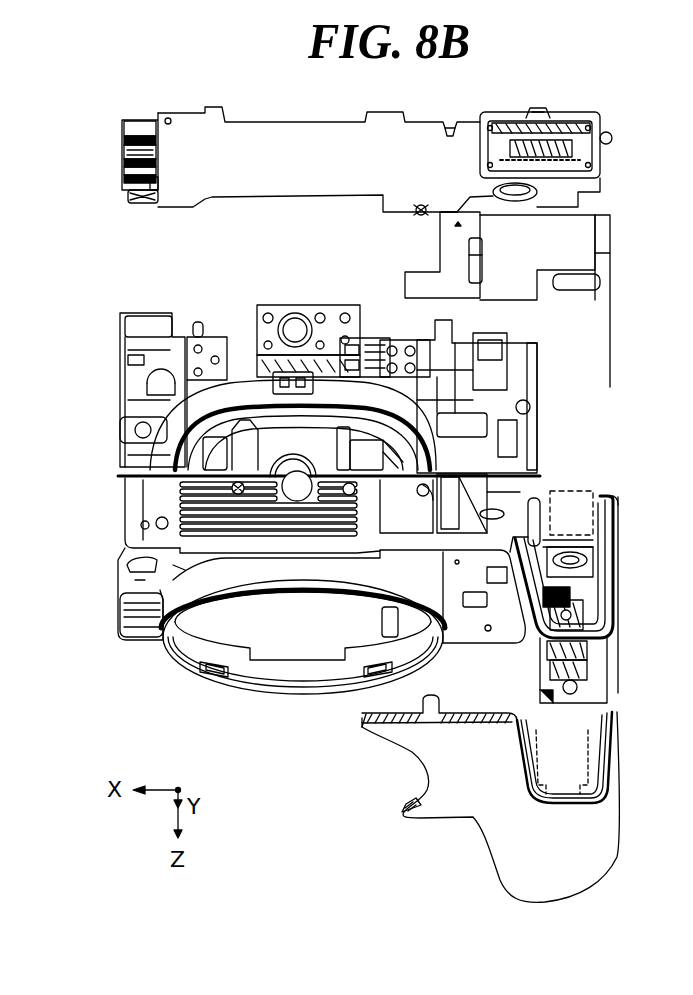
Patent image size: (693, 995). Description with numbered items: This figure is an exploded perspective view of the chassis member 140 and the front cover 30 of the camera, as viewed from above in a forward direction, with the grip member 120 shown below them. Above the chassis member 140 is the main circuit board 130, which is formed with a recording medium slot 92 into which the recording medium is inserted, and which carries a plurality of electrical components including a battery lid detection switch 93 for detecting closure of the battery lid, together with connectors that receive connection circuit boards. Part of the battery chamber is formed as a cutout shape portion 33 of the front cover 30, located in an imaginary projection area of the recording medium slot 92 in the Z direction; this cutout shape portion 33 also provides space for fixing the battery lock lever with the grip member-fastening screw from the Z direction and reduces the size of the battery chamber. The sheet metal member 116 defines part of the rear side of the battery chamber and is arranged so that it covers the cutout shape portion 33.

The main circuit board 130 is at (158, 207).
The battery lid detection switch 93 is at (538, 110).
The recording medium slot 92 is at (595, 158).
The sheet metal member 116 is at (420, 282).
The chassis member 140 is at (537, 395).
The cutout shape portion 33 is at (572, 487).
The front cover 30 is at (619, 538).
The grip member 120 is at (440, 788).